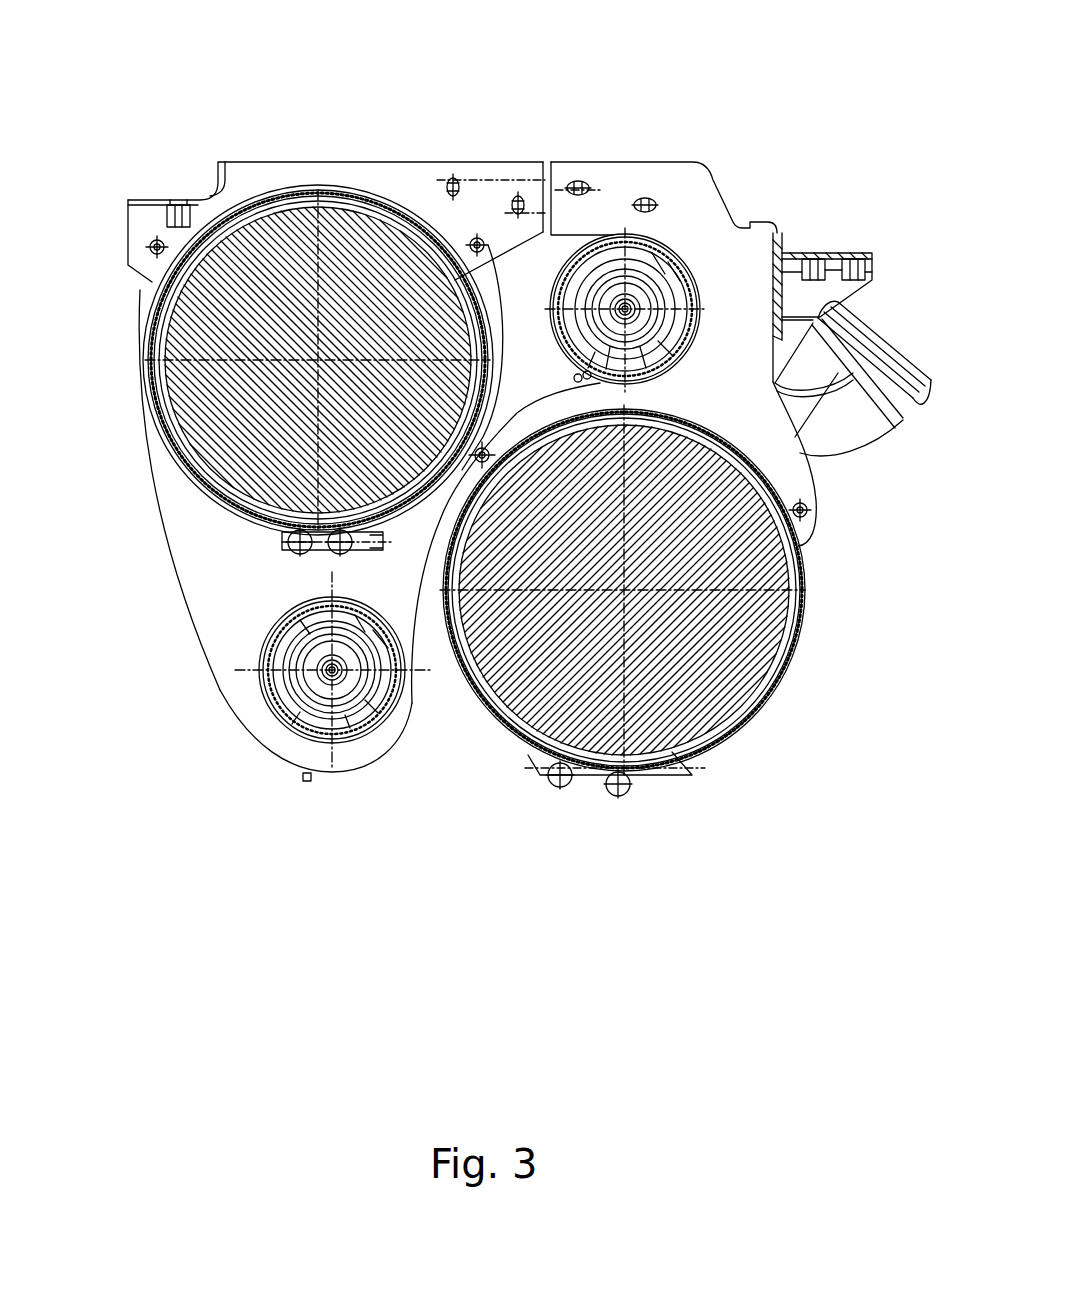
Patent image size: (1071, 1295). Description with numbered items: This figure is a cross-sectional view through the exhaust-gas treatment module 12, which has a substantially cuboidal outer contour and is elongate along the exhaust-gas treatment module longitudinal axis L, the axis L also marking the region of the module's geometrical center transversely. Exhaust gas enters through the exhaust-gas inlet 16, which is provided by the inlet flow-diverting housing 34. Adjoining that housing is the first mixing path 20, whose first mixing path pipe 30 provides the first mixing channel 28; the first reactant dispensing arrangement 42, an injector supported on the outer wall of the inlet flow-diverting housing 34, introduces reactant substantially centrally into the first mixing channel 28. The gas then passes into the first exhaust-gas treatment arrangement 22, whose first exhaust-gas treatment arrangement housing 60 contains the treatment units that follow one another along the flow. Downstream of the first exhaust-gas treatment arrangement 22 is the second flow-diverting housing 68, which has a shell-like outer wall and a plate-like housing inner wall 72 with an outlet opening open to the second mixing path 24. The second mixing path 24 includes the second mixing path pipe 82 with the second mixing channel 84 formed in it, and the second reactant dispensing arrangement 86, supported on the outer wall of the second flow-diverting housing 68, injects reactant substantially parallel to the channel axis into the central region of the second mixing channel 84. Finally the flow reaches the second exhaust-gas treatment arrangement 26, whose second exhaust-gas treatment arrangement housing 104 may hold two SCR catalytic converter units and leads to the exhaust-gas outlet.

The exhaust-gas treatment module 12 is at (126, 113).
The first exhaust-gas treatment arrangement 22 is at (246, 186).
The first exhaust-gas treatment arrangement housing 60 is at (325, 185).
The first mixing path pipe 30 is at (563, 283).
The first mixing path 20 is at (612, 232).
The first reactant dispensing arrangement 42 is at (633, 296).
The first mixing channel 28 is at (672, 283).
The exhaust-gas inlet 16 is at (890, 355).
The inlet flow-diverting housing 34 is at (870, 452).
The housing inner wall 72 is at (192, 548).
The second flow-diverting housing 68 is at (182, 596).
The second mixing channel 84 is at (288, 678).
The second reactant dispensing arrangement 86 is at (322, 680).
The second mixing path 24 is at (363, 738).
The second mixing path pipe 82 is at (388, 708).
The second exhaust-gas treatment arrangement housing 104 is at (786, 682).
The second exhaust-gas treatment arrangement 26 is at (745, 760).
The exhaust-gas treatment module longitudinal axis L is at (510, 408).